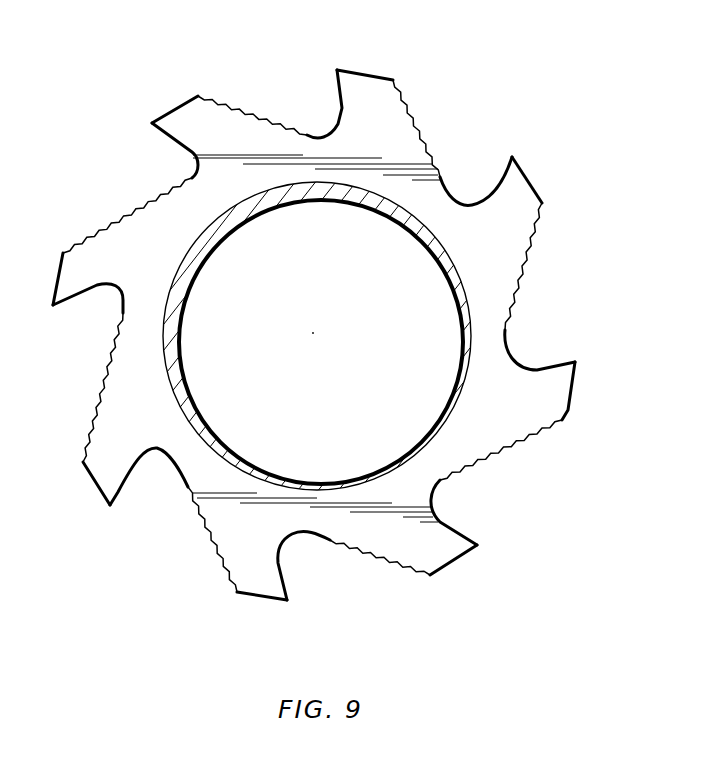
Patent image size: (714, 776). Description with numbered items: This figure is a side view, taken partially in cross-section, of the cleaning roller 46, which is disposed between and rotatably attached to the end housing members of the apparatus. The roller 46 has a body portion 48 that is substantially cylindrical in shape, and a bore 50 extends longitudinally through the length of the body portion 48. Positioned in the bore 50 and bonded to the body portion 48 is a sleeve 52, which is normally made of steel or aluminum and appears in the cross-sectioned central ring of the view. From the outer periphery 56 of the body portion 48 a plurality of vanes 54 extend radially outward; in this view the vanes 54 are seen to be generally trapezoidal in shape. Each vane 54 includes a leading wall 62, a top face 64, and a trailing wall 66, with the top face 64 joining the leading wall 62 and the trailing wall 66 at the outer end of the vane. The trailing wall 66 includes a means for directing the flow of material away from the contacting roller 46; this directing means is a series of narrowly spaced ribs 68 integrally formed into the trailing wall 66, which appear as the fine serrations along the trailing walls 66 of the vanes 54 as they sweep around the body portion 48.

The cleaning roller 46 is at (541, 306).
The body portion 48 is at (417, 475).
The bore 50 is at (165, 358).
The sleeve 52 is at (438, 268).
The vanes 54 is at (228, 90).
The outer periphery 56 is at (380, 133).
The leading wall 62 is at (340, 109).
The top face 64 is at (371, 71).
The trailing wall 66 is at (431, 153).
The ribs 68 is at (118, 222).